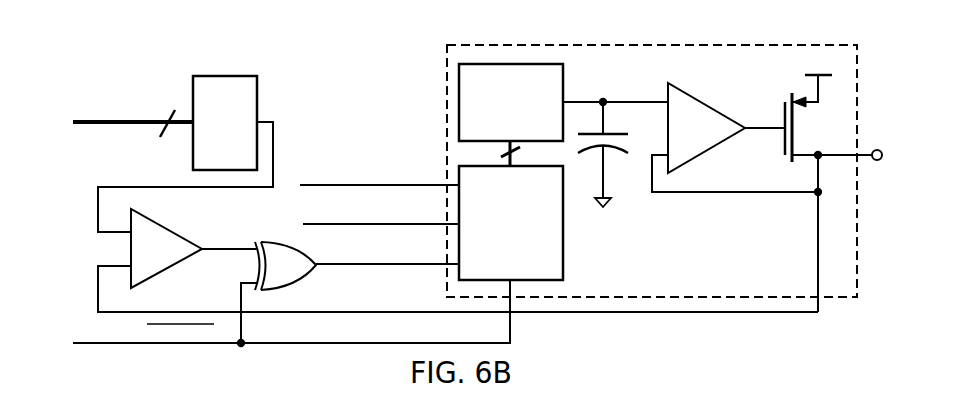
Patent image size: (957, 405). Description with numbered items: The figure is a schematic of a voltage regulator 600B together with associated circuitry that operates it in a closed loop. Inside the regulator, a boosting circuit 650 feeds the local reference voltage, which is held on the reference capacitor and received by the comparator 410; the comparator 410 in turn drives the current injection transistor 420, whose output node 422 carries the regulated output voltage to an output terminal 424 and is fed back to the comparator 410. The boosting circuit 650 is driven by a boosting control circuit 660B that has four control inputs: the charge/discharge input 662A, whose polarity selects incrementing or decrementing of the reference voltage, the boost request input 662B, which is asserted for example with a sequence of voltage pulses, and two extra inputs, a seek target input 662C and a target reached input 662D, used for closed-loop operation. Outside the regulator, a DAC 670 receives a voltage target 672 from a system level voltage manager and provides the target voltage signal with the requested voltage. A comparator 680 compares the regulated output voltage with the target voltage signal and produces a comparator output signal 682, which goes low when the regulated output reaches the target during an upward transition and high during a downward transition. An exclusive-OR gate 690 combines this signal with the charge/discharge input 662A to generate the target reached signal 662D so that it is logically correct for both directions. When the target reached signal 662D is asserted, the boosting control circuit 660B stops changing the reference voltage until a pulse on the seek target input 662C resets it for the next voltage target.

The voltage target 672 is at (158, 122).
The DAC 670 is at (238, 141).
The comparator 680 is at (167, 258).
The comparator output signal 682 is at (218, 249).
The exclusive-OR (XOR) gate 690 is at (295, 273).
The charge/discharge input 662A is at (242, 332).
The boost request input 662B is at (323, 224).
The seek target input 662C is at (323, 185).
The target reached input 662D is at (389, 264).
The boosting circuit 650 is at (523, 130).
The boosting control circuit 660B is at (530, 262).
The comparator 410 is at (708, 111).
The current injection transistor 420 is at (784, 111).
The regulated output node 422 is at (833, 147).
The output terminal 424 is at (875, 150).
The voltage regulator 600B is at (721, 250).